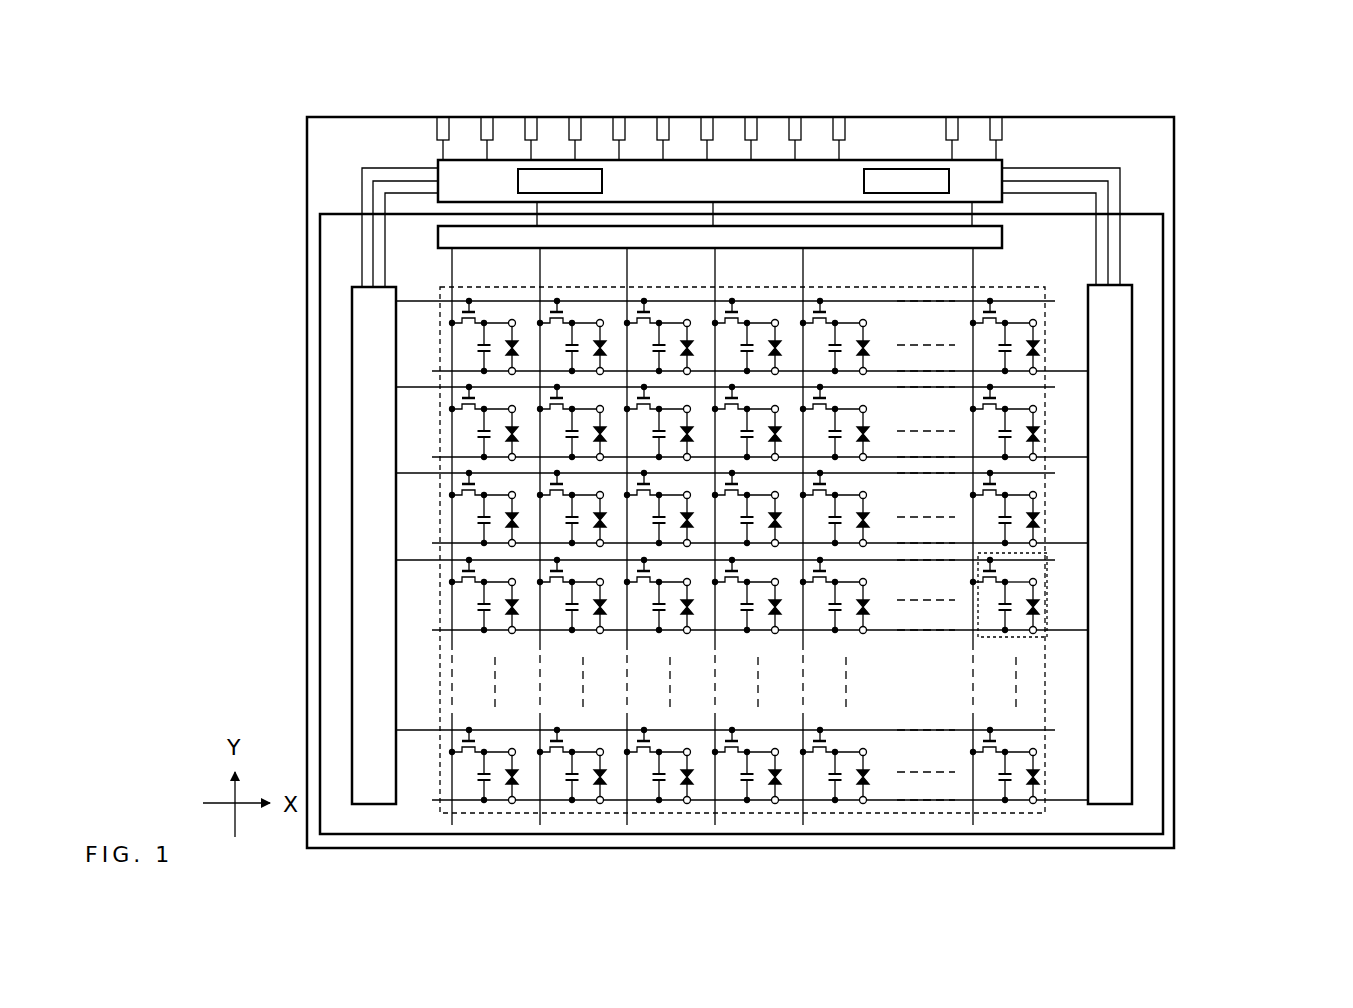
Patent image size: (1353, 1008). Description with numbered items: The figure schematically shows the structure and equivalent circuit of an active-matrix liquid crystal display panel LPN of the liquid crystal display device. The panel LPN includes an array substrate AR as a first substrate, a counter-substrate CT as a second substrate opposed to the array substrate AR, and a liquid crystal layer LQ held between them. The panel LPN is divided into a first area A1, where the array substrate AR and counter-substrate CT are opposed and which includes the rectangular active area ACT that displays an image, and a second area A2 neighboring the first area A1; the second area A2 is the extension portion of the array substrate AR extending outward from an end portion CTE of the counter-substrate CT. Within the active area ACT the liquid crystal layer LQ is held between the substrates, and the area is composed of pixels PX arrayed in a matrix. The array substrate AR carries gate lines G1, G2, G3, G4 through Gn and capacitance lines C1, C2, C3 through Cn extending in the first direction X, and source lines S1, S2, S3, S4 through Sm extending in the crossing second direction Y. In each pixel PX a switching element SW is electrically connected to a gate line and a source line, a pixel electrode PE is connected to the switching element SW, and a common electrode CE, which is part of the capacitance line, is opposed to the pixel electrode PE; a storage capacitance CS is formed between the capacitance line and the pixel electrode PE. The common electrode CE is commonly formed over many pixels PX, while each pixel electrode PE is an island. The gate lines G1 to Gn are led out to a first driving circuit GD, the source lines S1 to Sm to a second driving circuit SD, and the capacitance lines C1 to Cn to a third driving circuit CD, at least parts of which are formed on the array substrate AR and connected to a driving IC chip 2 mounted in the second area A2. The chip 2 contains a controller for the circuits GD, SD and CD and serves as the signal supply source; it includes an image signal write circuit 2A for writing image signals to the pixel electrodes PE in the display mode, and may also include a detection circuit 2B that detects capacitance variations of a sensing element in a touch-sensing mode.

The liquid crystal display panel LPN is at (1218, 121).
The counter-substrate CT is at (1165, 269).
The array substrate AR is at (1158, 169).
The driving IC chip 2 is at (1004, 160).
The image signal write circuit 2A is at (605, 180).
The detection circuit 2B is at (862, 182).
The second driving circuit SD is at (1004, 236).
The first driving circuit GD is at (352, 665).
The third driving circuit CD is at (1133, 340).
The end portion of the counter-substrate CTE is at (1081, 206).
The first area A1 is at (1080, 271).
The second area A2 is at (1146, 141).
The active area ACT is at (1046, 406).
The gate line G1 is at (411, 300).
The gate line G2 is at (411, 386).
The gate line G3 is at (411, 472).
The gate line G4 is at (411, 559).
The gate line Gn is at (411, 729).
The source line S1 is at (456, 272).
The source line S2 is at (543, 272).
The source line S3 is at (630, 272).
The source line S4 is at (718, 272).
The source line Sm is at (976, 272).
The capacitance line C1 is at (1062, 370).
The capacitance line C2 is at (1062, 456).
The capacitance line C3 is at (1062, 542).
The capacitance line Cn is at (1062, 799).
The pixel PX is at (1016, 604).
The switching element SW is at (978, 574).
The storage capacitance CS is at (992, 606).
The pixel electrode PE is at (1037, 581).
The liquid crystal layer LQ is at (1040, 601).
The common electrode CE is at (1037, 629).